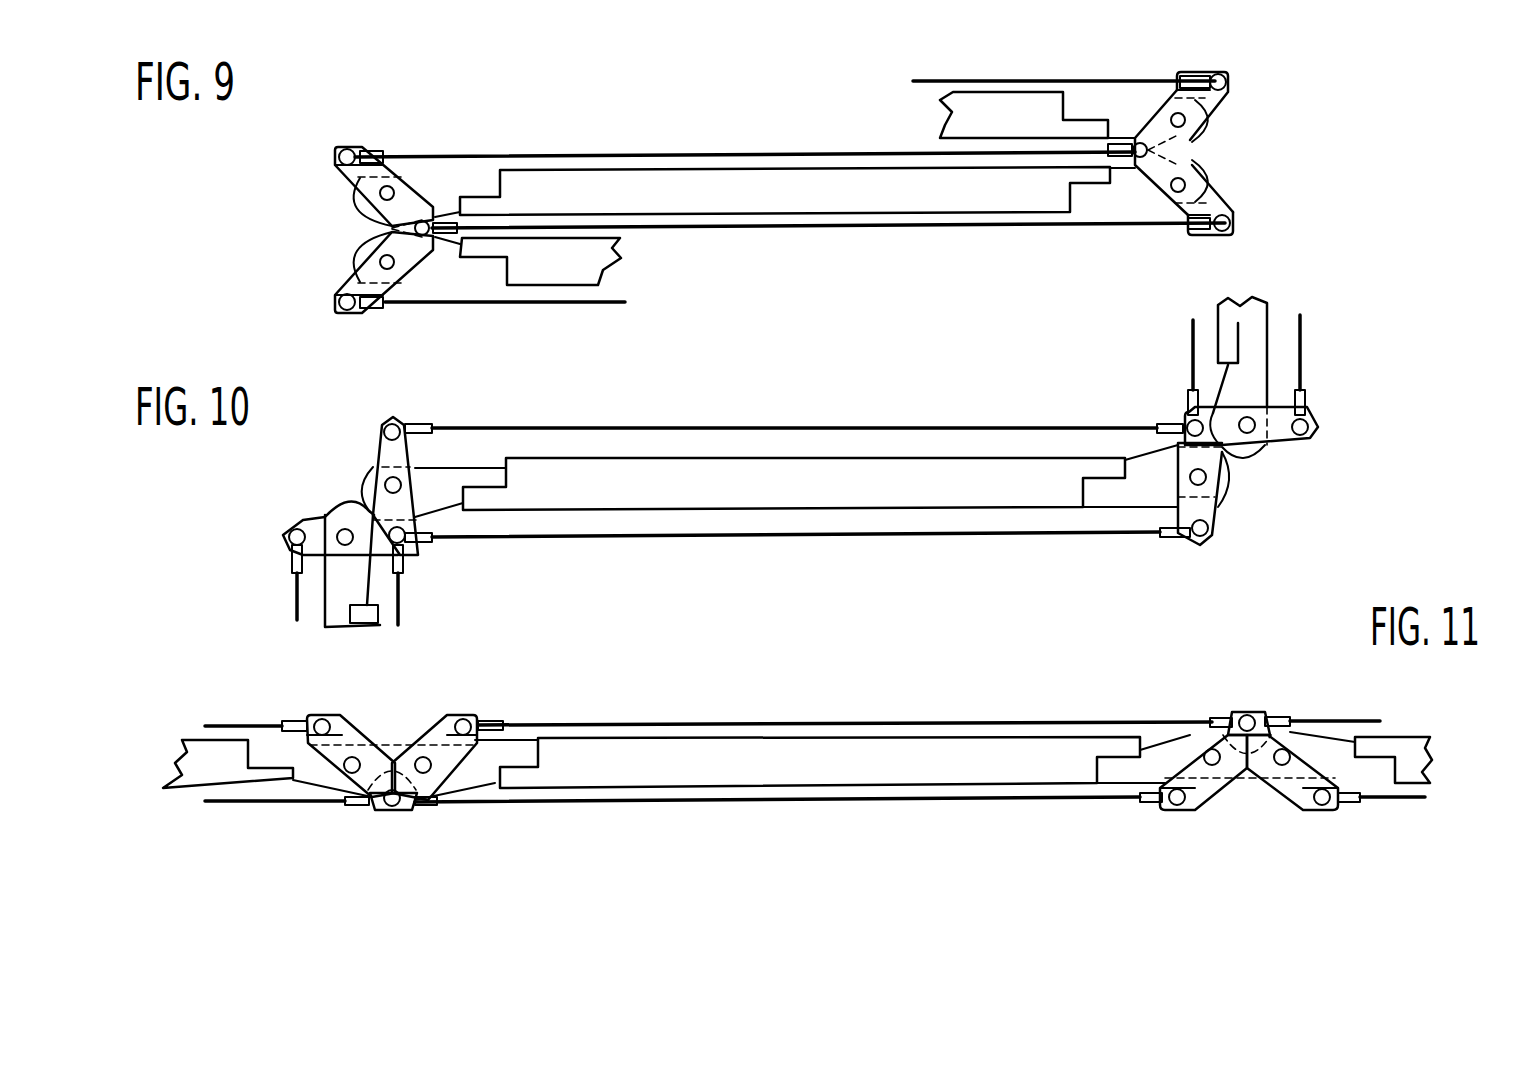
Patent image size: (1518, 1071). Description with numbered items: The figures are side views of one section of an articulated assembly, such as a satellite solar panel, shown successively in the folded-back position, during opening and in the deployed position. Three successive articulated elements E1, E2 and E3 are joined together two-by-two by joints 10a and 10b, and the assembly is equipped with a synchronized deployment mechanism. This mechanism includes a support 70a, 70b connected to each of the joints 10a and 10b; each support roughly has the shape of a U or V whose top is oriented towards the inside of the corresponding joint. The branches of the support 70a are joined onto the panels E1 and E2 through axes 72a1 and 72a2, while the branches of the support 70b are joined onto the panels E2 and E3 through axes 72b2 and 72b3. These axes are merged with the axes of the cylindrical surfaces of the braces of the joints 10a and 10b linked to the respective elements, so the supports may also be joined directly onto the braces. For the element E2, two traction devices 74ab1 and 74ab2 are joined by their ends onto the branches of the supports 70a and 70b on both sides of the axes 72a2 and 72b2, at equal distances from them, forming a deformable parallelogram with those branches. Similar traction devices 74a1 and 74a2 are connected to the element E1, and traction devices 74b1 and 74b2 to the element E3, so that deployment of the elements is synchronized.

In FIG. 9, the joint 10a is at (360, 208).
In FIG. 10, the joint 10a is at (414, 472).
In FIG. 11, the joint 10a is at (423, 763).
In FIG. 9, the joint 10b is at (1227, 129).
In FIG. 10, the joint 10b is at (1233, 491).
In FIG. 11, the joint 10b is at (1231, 734).
In FIG. 9, the support 70a is at (410, 183).
In FIG. 10, the support 70a is at (417, 458).
In FIG. 11, the support 70a is at (452, 768).
In FIG. 9, the support 70b is at (1143, 120).
In FIG. 10, the support 70b is at (1173, 513).
In FIG. 11, the support 70b is at (1186, 744).
In FIG. 9, the axis 72a1 is at (378, 265).
In FIG. 9, the axis 72a2 is at (378, 196).
In FIG. 9, the axis 72b2 is at (1190, 183).
In FIG. 9, the axis 72b3 is at (1187, 120).
In FIG. 9, the traction device 74a1 is at (582, 304).
In FIG. 10, the traction device 74a1 is at (292, 592).
In FIG. 11, the traction device 74a1 is at (268, 703).
In FIG. 10, the traction device 74a2 is at (405, 617).
In FIG. 11, the traction device 74a2 is at (253, 803).
In FIG. 10, the traction device 74b1 is at (1213, 348).
In FIG. 11, the traction device 74b1 is at (1353, 700).
In FIG. 9, the traction device 74b2 is at (950, 78).
In FIG. 10, the traction device 74b2 is at (1303, 372).
In FIG. 11, the traction device 74b2 is at (1405, 802).
In FIG. 9, the traction device 74ab1 is at (700, 125).
In FIG. 10, the traction device 74ab1 is at (948, 432).
In FIG. 11, the traction device 74ab1 is at (800, 705).
In FIG. 9, the traction device 74ab2 is at (795, 230).
In FIG. 10, the traction device 74ab2 is at (662, 538).
In FIG. 11, the traction device 74ab2 is at (830, 803).
In FIG. 9, the articulated element E1 is at (592, 255).
In FIG. 10, the articulated element E1 is at (327, 627).
In FIG. 11, the articulated element E1 is at (197, 780).
In FIG. 9, the articulated element E2 is at (933, 197).
In FIG. 10, the articulated element E2 is at (925, 490).
In FIG. 11, the articulated element E2 is at (928, 750).
In FIG. 9, the articulated element E3 is at (960, 117).
In FIG. 10, the articulated element E3 is at (1260, 313).
In FIG. 11, the articulated element E3 is at (1393, 733).